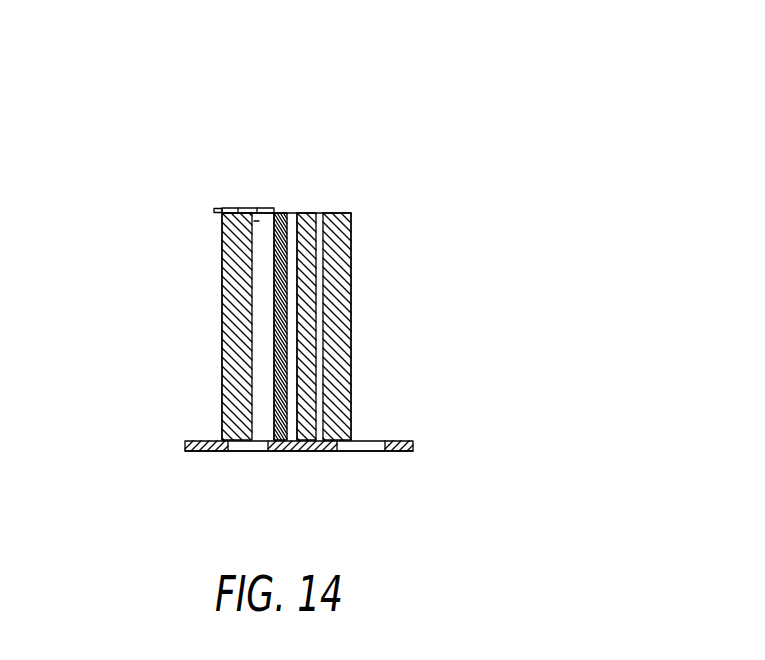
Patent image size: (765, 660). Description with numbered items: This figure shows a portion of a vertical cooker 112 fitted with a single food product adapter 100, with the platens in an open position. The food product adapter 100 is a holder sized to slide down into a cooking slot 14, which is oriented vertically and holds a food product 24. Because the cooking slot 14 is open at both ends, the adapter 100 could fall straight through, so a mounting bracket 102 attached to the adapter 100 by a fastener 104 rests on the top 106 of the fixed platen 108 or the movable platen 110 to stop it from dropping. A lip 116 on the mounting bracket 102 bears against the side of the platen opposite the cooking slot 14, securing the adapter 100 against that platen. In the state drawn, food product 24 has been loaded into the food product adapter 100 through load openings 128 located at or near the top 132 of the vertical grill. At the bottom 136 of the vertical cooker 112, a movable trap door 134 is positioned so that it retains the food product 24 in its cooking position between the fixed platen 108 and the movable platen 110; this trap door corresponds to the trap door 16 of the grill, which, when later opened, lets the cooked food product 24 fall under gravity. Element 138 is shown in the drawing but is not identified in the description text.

The cooking slot 14 is at (293, 212).
The trap door 16 is at (403, 441).
The food product 24 is at (287, 213).
The food product adapter 100 is at (222, 208).
The mounting bracket 102 is at (254, 251).
The fastener 104 is at (262, 208).
The top of platen 106 is at (265, 213).
The fixed platen 108 is at (222, 313).
The movable platen 110 is at (308, 213).
The vertical cooker 112 is at (492, 130).
The lip 116 is at (220, 218).
The load opening 128 is at (278, 213).
The top of vertical grill 132 is at (298, 213).
The movable trap door 134 is at (400, 452).
The bottom of vertical cooker 136 is at (205, 450).
The base segment 138 is at (248, 452).